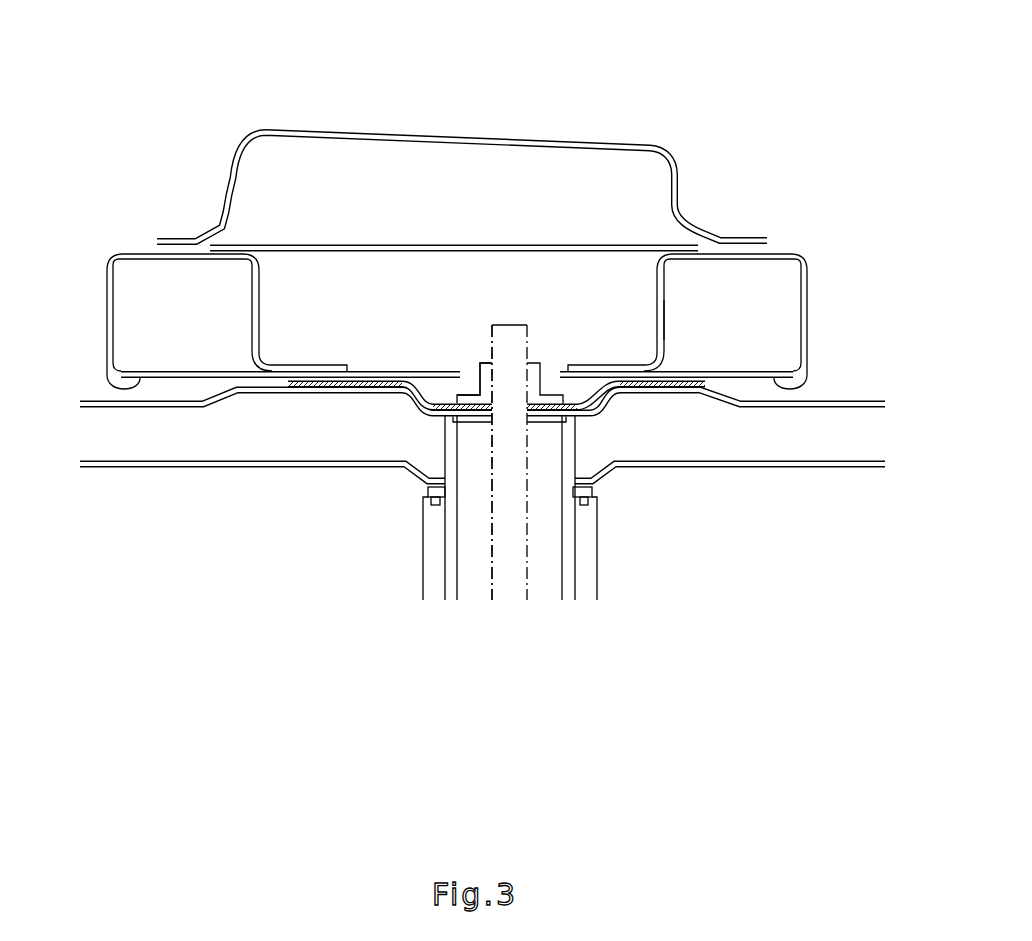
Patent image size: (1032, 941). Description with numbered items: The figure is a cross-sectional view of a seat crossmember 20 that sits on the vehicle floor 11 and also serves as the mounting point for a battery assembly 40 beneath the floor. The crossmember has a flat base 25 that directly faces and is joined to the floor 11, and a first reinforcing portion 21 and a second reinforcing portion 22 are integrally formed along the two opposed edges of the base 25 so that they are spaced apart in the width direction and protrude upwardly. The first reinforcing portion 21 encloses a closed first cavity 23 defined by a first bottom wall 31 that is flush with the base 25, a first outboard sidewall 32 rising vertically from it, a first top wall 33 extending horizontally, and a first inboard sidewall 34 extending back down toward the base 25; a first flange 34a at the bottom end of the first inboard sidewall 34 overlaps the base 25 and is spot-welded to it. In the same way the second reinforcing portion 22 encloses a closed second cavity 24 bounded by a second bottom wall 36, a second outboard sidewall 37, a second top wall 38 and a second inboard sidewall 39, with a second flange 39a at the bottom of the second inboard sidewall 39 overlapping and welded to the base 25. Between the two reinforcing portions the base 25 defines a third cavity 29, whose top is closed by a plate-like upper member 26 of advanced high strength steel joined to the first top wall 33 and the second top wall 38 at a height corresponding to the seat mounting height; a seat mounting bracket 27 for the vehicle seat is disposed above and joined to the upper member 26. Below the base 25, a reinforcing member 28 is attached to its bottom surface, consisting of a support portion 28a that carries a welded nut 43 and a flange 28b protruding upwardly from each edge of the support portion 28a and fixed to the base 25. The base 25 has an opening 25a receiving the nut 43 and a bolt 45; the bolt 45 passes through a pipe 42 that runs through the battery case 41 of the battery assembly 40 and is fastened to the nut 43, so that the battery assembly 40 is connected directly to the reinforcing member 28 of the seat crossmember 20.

The seat crossmember 20 is at (454, 124).
The seat mounting bracket 27 is at (462, 137).
The upper member 26 is at (458, 244).
The base 25 is at (423, 370).
The opening 25a is at (472, 374).
The third cavity 29 is at (446, 306).
The nut 43 is at (530, 361).
The bolt 45 is at (492, 598).
The floor 11 is at (135, 408).
The reinforcing member 28 is at (498, 470).
The support portion 28a is at (577, 416).
The flange 28b is at (667, 393).
The battery assembly 40 is at (505, 502).
The battery case 41 is at (775, 459).
The pipe 42 is at (422, 541).
The first reinforcing portion 21 is at (182, 288).
The first bottom wall 31 is at (120, 386).
The first outboard sidewall 32 is at (106, 312).
The first top wall 33 is at (143, 250).
The first inboard sidewall 34 is at (259, 286).
The first flange 34a is at (332, 364).
The first cavity 23 is at (172, 330).
The second reinforcing portion 22 is at (731, 290).
The second bottom wall 36 is at (800, 386).
The second outboard sidewall 37 is at (808, 312).
The second top wall 38 is at (771, 251).
The second inboard sidewall 39 is at (657, 289).
The second flange 39a is at (597, 364).
The second cavity 24 is at (717, 330).